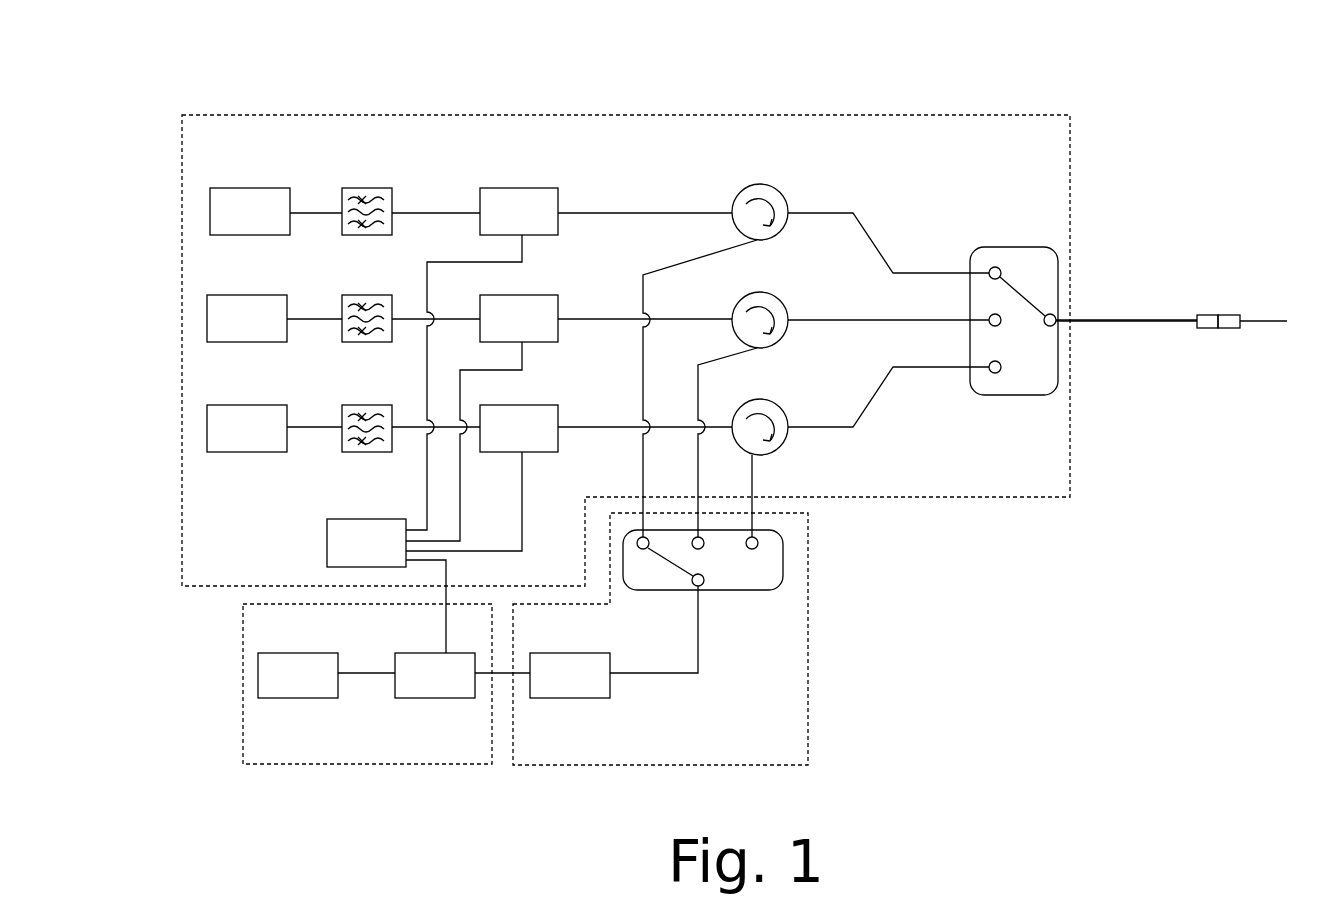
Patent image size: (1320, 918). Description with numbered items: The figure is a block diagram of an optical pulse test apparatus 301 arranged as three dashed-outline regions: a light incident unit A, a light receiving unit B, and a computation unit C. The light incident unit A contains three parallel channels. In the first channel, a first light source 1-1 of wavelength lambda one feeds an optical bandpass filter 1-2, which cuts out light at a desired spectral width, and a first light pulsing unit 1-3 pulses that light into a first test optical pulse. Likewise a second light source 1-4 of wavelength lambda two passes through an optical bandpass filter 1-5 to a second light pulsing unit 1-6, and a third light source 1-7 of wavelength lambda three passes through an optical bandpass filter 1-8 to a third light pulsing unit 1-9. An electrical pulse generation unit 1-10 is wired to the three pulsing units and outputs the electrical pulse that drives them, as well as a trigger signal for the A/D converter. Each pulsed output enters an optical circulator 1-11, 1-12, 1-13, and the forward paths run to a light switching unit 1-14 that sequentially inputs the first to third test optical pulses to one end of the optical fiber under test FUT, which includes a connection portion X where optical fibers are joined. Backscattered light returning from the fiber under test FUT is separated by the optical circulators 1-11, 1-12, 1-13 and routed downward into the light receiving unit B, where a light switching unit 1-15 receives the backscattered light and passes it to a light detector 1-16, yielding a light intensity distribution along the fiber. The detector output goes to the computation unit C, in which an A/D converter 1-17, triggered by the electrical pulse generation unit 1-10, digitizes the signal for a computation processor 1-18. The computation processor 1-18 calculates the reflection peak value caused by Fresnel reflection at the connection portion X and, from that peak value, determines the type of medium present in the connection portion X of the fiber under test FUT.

The optical pulse test apparatus 301 is at (723, 108).
The light incident unit A is at (873, 117).
The light receiving unit B is at (808, 628).
The computation unit C is at (243, 684).
The first light source 1-1 is at (246, 188).
The optical bandpass filter 1-2 is at (366, 188).
The first light pulsing unit 1-3 is at (524, 188).
The second light source 1-4 is at (248, 295).
The optical bandpass filter 1-5 is at (372, 295).
The second light pulsing unit 1-6 is at (550, 295).
The third light source 1-7 is at (248, 405).
The optical bandpass filter 1-8 is at (372, 405).
The third light pulsing unit 1-9 is at (550, 405).
The electrical pulse generation unit 1-10 is at (357, 519).
The optical circulator 1-11 is at (781, 190).
The optical circulator 1-12 is at (781, 296).
The optical circulator 1-13 is at (781, 404).
The light switching unit 1-14 is at (1008, 247).
The light switching unit 1-15 is at (733, 592).
The light detector 1-16 is at (578, 698).
The A/D converter 1-17 is at (443, 698).
The computation processor 1-18 is at (303, 698).
The optical fiber under test FUT is at (1148, 320).
The connection portion X is at (1216, 315).